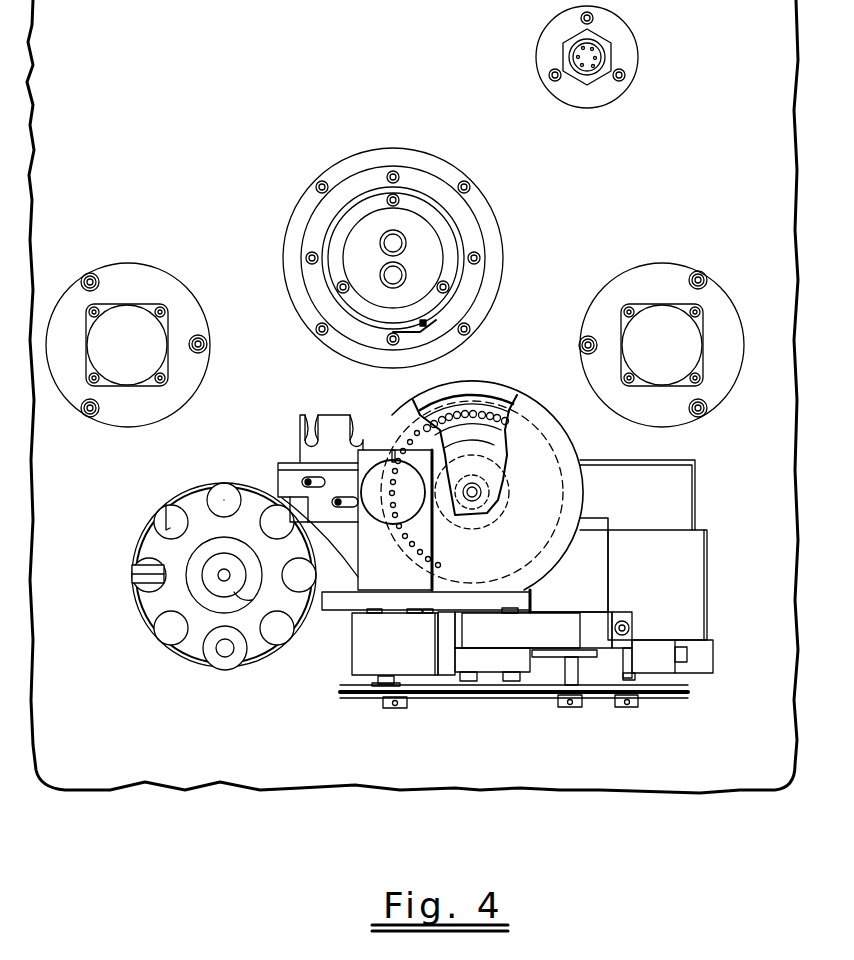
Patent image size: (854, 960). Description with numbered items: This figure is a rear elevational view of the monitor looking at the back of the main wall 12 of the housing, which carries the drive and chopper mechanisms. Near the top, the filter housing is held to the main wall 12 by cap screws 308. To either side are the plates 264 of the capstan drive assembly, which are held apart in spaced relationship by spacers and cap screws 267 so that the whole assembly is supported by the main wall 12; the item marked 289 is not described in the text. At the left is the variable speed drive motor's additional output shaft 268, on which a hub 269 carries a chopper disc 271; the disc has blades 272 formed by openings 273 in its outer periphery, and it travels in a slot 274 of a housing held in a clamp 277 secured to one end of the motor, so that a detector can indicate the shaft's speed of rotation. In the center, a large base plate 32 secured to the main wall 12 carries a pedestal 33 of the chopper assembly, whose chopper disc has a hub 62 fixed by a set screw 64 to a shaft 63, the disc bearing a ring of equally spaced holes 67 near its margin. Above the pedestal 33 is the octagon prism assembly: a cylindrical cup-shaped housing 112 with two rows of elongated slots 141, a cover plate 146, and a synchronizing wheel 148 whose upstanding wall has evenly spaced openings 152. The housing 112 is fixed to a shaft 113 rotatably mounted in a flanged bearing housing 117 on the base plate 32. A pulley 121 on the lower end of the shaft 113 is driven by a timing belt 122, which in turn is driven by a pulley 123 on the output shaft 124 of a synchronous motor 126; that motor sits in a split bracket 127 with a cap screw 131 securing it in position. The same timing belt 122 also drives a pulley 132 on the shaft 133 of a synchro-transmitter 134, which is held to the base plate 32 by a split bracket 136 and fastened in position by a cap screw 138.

The main wall 12 is at (765, 25).
The cap screws 308 is at (468, 184).
The plates 264 is at (412, 332).
The cap screws 267 is at (207, 342).
The connector receptacle 289 is at (135, 357).
The chopper disc 271 is at (201, 577).
The blades 272 is at (192, 507).
The openings 273 is at (162, 518).
The clamp 277 is at (140, 583).
The output shaft 268 is at (228, 574).
The hub 269 is at (252, 600).
The slot 274 is at (222, 665).
The cylindrical housing 112 is at (298, 475).
The elongated slots 141 is at (306, 479).
The cover plate 146 is at (338, 420).
The synchronizing wheel 148 is at (307, 432).
The openings 152 is at (358, 434).
The pedestal 33 is at (404, 581).
The hub 62 is at (482, 474).
The holes 67 is at (487, 410).
The set screw 64 is at (497, 512).
The shaft 63 is at (474, 497).
The synchro-transmitter 134 is at (697, 562).
The synchronous motor 126 is at (586, 594).
The base plate 32 is at (343, 603).
The flanged bearing housing 117 is at (411, 644).
The shaft 113 is at (382, 678).
The timing belt 122 is at (507, 696).
The output shaft 124 is at (556, 665).
The split bracket 127 is at (632, 614).
The cap screw 131 is at (630, 628).
The split bracket 136 is at (710, 668).
The cap screw 138 is at (687, 655).
The shaft 133 is at (634, 680).
The pulley 121 is at (397, 710).
The pulley 123 is at (575, 708).
The pulley 132 is at (628, 708).